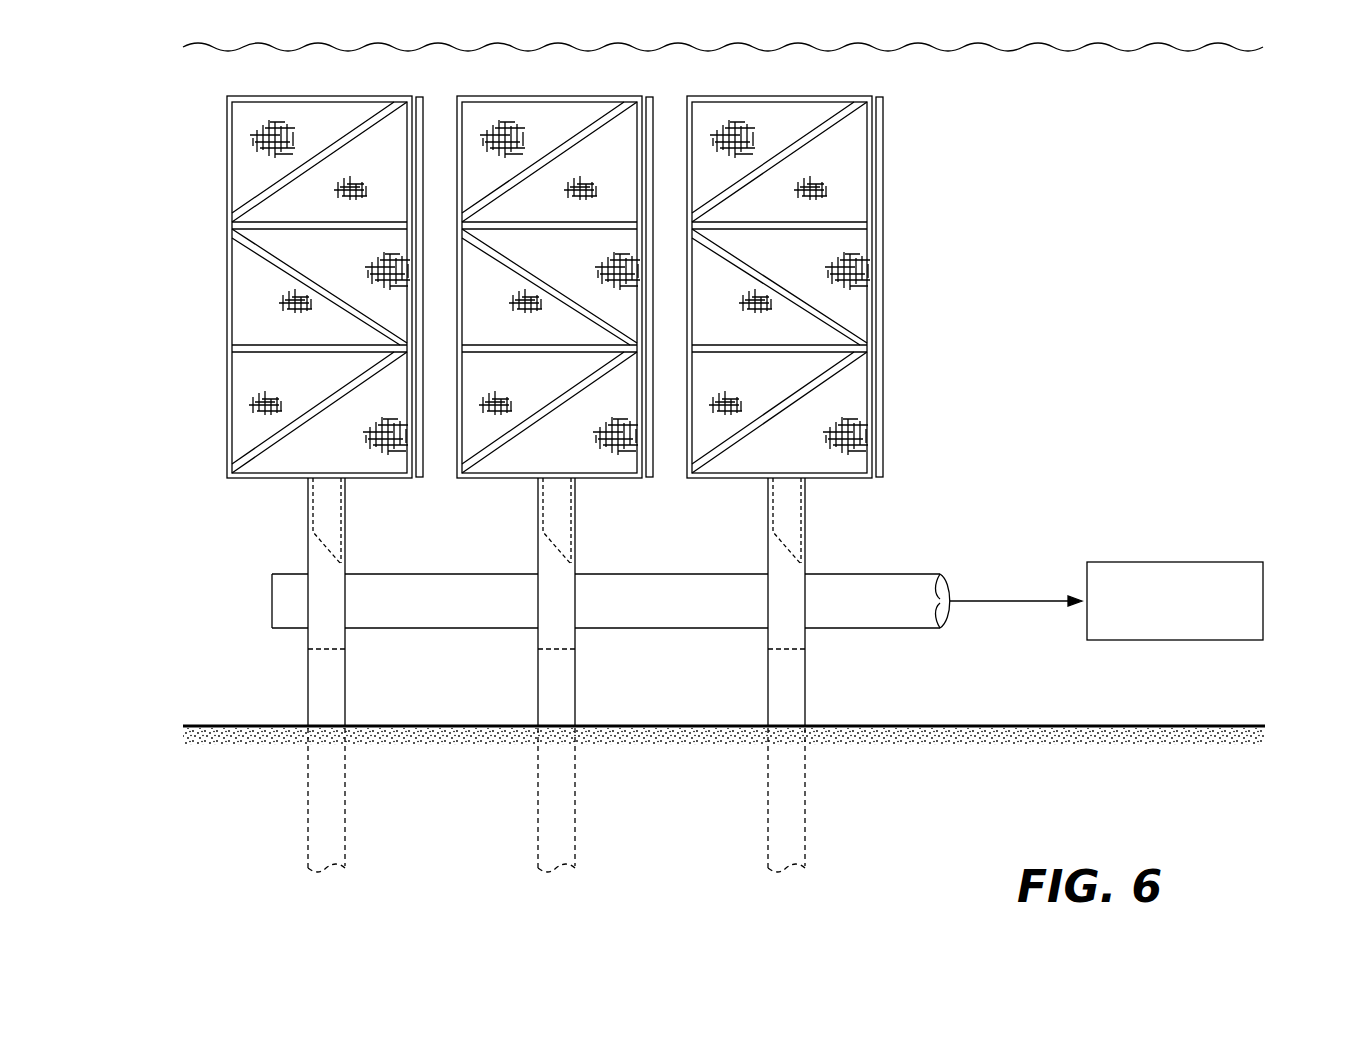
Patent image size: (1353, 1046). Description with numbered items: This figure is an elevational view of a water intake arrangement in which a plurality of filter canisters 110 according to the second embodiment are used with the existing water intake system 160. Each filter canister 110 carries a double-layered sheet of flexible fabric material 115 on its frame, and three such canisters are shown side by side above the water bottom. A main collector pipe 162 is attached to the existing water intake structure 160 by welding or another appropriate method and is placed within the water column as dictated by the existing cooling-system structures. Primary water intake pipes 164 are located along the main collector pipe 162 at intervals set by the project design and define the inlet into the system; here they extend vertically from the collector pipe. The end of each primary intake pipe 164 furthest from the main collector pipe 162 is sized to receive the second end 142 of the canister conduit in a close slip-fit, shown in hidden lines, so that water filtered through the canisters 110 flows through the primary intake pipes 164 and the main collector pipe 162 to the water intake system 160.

The filter canister 110 is at (650, 287).
The double-layered sheet of flexible fabric material 115 is at (350, 267).
The second end of conduit 142 is at (318, 547).
The water intake system 160 is at (1103, 575).
The main collector pipe 162 is at (912, 580).
The primary water intake pipes 164 is at (317, 516).